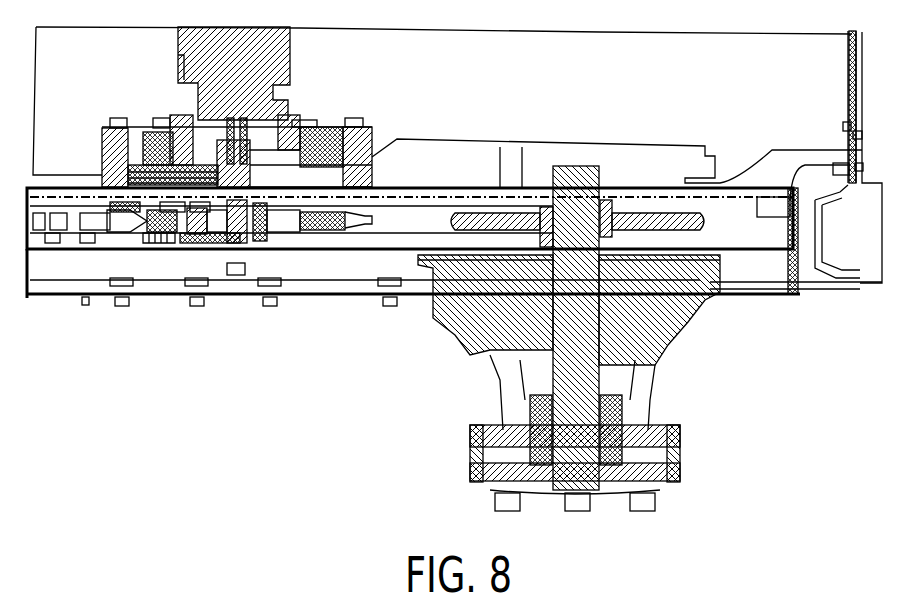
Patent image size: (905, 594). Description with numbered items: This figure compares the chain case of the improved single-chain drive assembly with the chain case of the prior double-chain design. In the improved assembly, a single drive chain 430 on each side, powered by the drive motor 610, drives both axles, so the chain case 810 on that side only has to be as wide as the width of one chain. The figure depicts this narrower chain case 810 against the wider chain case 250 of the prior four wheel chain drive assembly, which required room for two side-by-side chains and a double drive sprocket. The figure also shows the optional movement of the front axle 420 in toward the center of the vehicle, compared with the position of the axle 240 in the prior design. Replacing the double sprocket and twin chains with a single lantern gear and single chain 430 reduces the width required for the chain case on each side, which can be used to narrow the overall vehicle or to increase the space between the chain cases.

The drive chain 430 is at (85, 188).
The drive motor 610 is at (272, 65).
The chain case 810 is at (427, 188).
The chain case 250 is at (185, 298).
The front axle 420 is at (717, 265).
The axle 240 is at (710, 308).